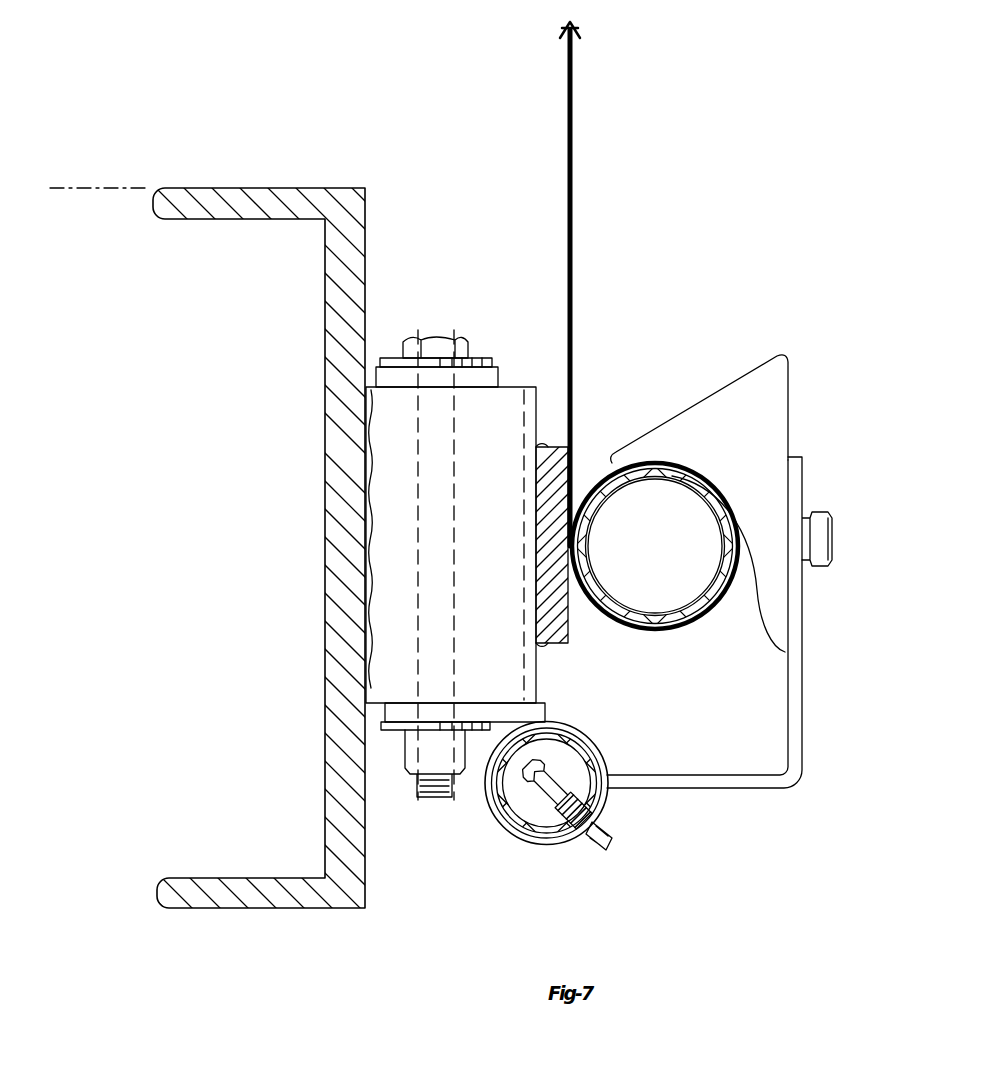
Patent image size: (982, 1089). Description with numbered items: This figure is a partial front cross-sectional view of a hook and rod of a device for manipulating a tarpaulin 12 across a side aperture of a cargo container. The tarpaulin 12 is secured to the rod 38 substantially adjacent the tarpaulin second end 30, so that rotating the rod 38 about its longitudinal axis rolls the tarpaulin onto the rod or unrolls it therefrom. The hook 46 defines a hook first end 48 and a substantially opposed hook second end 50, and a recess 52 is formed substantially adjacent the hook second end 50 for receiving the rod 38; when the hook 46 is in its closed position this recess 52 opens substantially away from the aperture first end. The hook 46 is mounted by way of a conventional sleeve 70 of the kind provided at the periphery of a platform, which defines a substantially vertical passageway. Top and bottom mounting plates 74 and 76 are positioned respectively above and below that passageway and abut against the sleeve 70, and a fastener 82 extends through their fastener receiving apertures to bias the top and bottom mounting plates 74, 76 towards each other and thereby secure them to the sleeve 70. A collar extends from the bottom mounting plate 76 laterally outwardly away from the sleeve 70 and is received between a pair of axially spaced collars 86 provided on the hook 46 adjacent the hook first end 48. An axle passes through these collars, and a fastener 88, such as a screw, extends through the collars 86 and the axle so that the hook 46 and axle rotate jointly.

The tarpaulin 12 is at (573, 155).
The tarpaulin second end 30 is at (590, 513).
The rod 38 is at (625, 458).
The hook 46 is at (793, 382).
The hook first end 48 is at (786, 358).
The hook second end 50 is at (790, 788).
The recess 52 is at (687, 480).
The sleeve 70 is at (553, 478).
The top mounting plate 74 is at (470, 378).
The bottom mounting plate 76 is at (392, 716).
The fastener 82 is at (441, 342).
The collar 86 is at (578, 840).
The fastener 88 is at (605, 830).